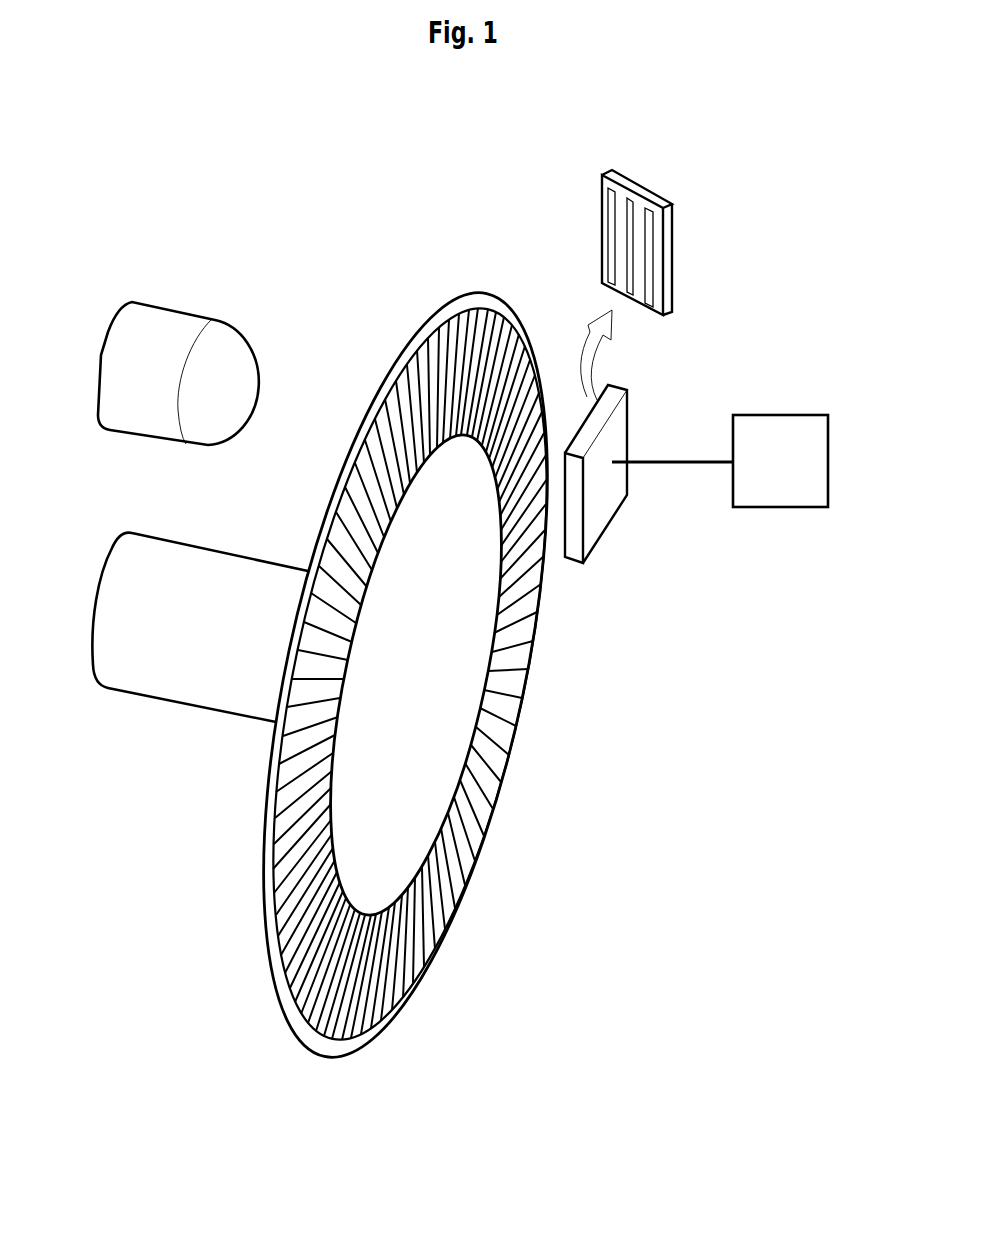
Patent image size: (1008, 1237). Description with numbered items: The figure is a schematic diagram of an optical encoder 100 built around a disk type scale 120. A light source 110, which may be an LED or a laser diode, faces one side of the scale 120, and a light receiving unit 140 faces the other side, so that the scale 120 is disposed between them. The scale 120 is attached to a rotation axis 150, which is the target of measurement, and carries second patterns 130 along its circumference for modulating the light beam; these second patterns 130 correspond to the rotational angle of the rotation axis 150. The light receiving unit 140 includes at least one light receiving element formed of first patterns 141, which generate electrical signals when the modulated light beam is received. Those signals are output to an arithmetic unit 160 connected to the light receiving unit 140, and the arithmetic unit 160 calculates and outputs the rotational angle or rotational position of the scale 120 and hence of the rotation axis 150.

The optical encoder 100 is at (328, 246).
The light source 110 is at (153, 322).
The scale 120 is at (492, 803).
The second patterns 130 is at (425, 932).
The light receiving unit 140 is at (648, 197).
The first patterns 141 is at (633, 240).
The rotation axis 150 is at (142, 683).
The arithmetic unit 160 is at (800, 508).